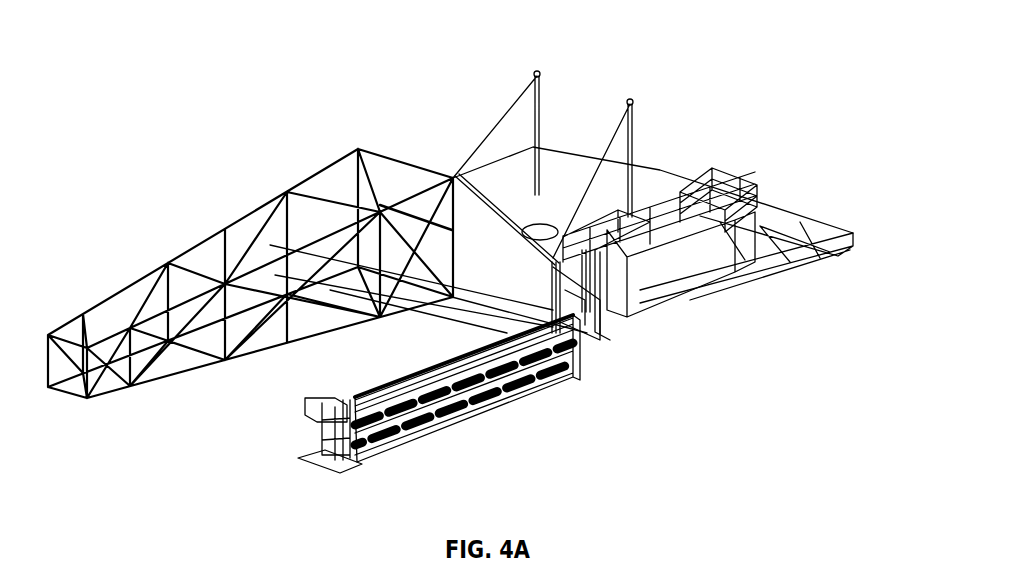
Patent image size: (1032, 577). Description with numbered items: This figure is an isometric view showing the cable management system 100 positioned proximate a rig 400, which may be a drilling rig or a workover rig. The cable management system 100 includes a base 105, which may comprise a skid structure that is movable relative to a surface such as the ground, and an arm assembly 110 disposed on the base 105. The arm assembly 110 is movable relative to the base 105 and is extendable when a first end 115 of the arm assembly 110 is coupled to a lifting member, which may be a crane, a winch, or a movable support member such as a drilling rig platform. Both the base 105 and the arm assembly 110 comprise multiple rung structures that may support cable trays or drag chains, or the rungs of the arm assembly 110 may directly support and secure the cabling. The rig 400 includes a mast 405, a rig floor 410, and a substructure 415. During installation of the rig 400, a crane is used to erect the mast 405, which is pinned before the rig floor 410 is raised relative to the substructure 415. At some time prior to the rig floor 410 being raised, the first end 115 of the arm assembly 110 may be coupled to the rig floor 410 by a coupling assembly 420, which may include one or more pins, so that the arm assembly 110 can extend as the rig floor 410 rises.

The cable management system 100 is at (281, 484).
The base 105 is at (391, 456).
The arm assembly 110 is at (406, 372).
The first end 115 is at (580, 327).
The rig 400 is at (445, 103).
The mast 405 is at (129, 282).
The rig floor 410 is at (567, 157).
The substructure 415 is at (790, 217).
The coupling assembly 420 is at (607, 343).